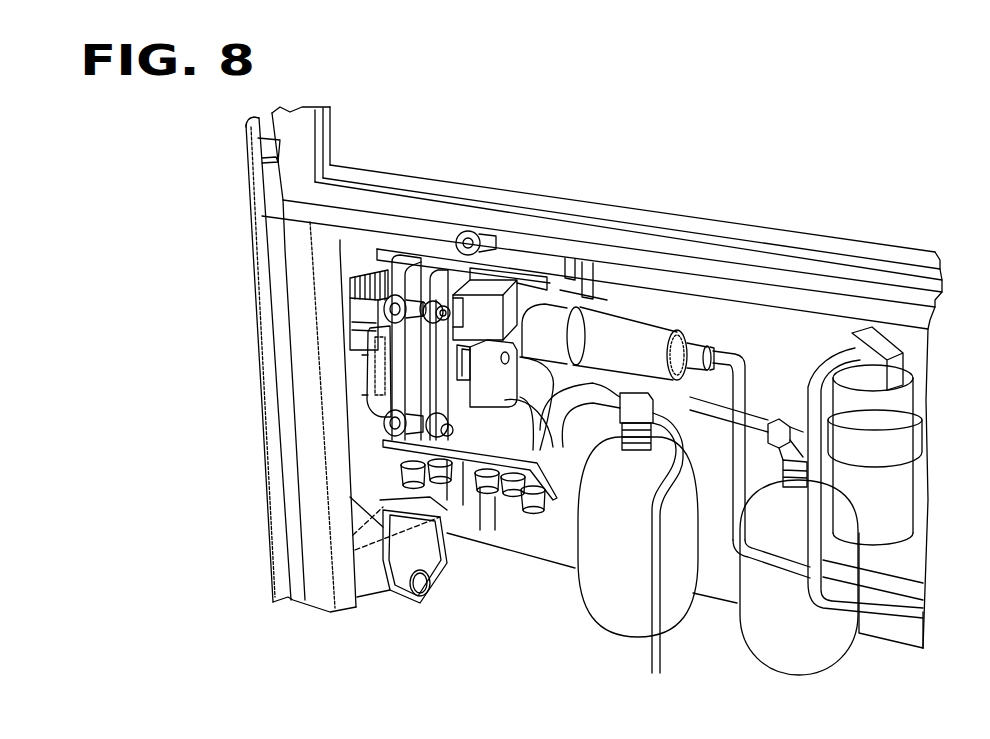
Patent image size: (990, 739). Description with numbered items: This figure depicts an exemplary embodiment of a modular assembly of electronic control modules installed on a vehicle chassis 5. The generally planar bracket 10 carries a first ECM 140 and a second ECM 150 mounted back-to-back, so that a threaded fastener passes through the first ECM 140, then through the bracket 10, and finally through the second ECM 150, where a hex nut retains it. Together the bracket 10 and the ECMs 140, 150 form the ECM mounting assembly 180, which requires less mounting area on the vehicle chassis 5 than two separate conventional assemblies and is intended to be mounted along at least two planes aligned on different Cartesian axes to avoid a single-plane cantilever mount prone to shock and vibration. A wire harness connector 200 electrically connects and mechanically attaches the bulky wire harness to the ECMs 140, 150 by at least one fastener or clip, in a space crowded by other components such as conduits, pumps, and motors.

The vehicle chassis 5 is at (313, 475).
The bracket 10 is at (403, 327).
The first ECM 140 is at (437, 382).
The second ECM 150 is at (400, 348).
The ECM mounting assembly 180 is at (378, 274).
The wire harness connector 200 is at (463, 445).